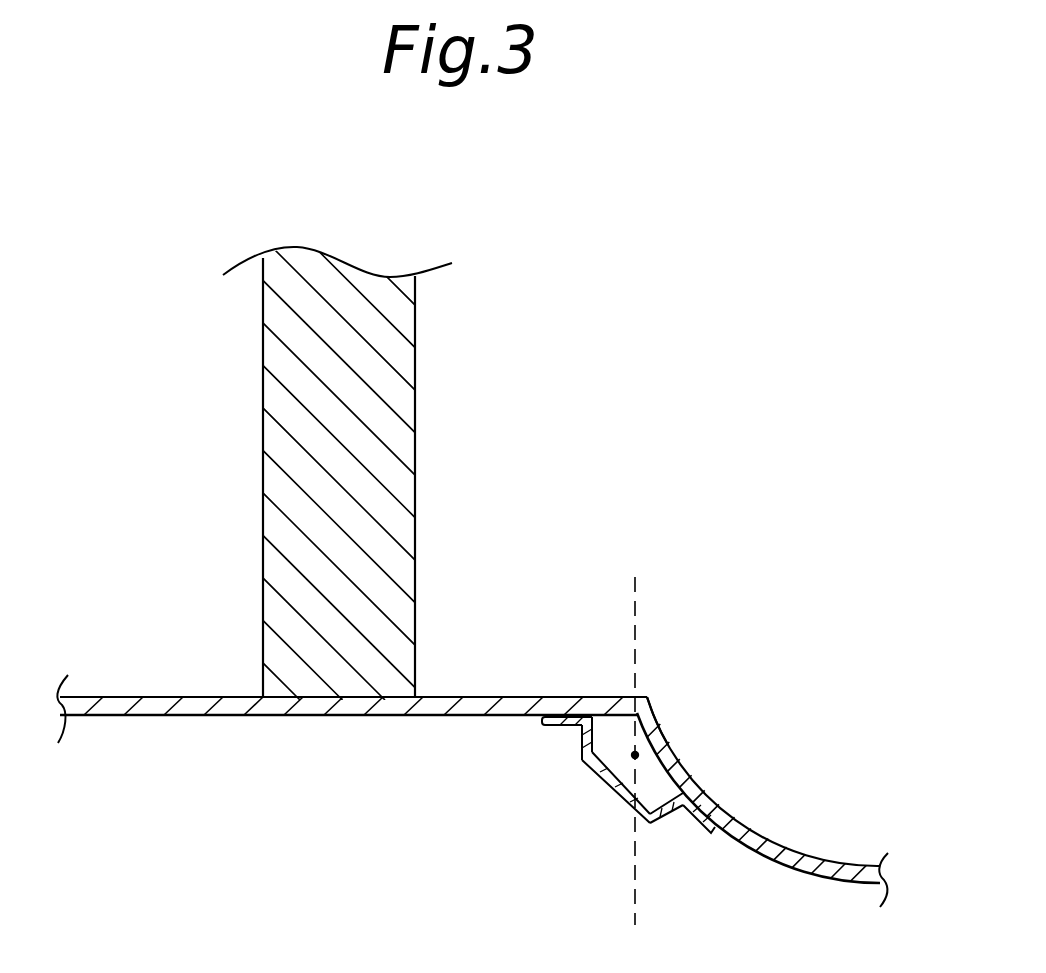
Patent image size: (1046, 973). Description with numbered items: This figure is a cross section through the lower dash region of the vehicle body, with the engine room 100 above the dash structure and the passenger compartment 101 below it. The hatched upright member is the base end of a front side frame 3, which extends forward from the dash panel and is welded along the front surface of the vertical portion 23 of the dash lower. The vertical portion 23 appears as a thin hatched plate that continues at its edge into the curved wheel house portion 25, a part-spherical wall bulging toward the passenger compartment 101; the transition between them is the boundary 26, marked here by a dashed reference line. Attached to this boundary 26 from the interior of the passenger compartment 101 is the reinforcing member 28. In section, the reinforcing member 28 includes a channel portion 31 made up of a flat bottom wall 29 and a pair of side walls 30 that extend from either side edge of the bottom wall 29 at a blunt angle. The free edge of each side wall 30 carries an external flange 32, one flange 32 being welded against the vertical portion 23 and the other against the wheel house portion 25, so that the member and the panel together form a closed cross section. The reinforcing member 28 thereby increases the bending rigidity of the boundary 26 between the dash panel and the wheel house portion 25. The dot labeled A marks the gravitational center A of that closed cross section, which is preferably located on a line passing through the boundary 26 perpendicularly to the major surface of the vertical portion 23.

The front side frame 3 is at (398, 403).
The vertical portion 23 is at (478, 707).
The wheel house portion 25 is at (805, 858).
The boundary 26 is at (640, 697).
The reinforcing member 28 is at (524, 825).
The flat bottom wall 29 is at (598, 777).
The side wall 30 is at (673, 820).
The channel portion 31 is at (502, 843).
The external flange 32 is at (558, 727).
The engine room 100 is at (170, 411).
The passenger compartment 101 is at (188, 850).
The gravitational center A is at (639, 752).